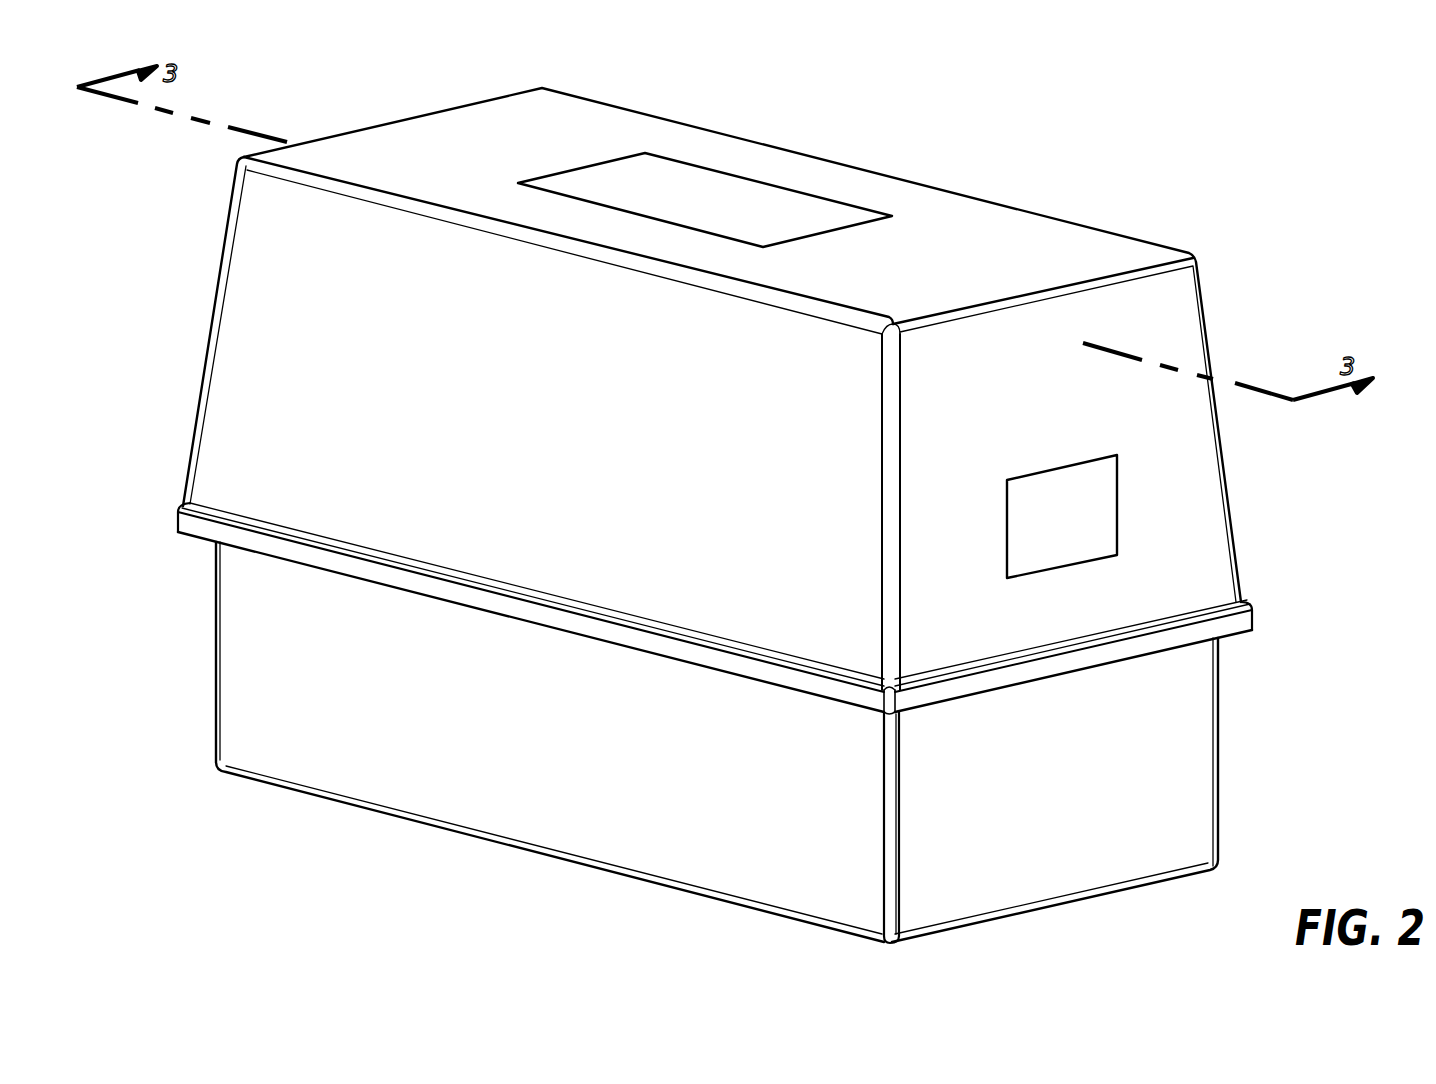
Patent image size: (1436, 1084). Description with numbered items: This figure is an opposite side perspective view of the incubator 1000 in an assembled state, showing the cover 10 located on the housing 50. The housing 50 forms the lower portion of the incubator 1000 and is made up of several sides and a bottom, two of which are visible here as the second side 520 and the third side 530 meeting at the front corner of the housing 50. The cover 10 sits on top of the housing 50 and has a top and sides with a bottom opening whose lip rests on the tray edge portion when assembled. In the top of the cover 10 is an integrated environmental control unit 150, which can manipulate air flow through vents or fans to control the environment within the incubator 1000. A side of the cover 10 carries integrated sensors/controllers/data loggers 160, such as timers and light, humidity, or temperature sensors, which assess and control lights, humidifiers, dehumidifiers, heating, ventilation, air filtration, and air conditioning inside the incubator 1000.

The incubator 1000 is at (1110, 76).
The cover 10 is at (786, 401).
The environmental control unit 150 is at (718, 193).
The sensors/controllers/data loggers 160 is at (1082, 507).
The housing 50 is at (766, 742).
The second side 520 is at (1037, 838).
The third side 530 is at (327, 755).